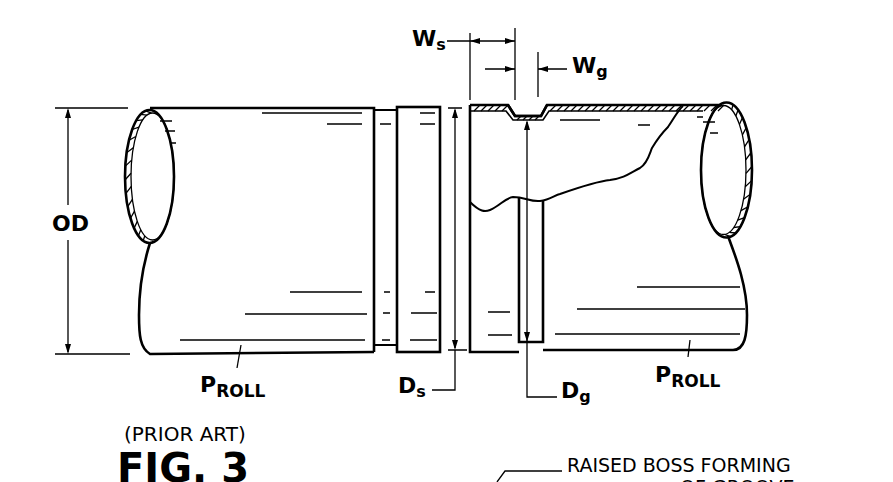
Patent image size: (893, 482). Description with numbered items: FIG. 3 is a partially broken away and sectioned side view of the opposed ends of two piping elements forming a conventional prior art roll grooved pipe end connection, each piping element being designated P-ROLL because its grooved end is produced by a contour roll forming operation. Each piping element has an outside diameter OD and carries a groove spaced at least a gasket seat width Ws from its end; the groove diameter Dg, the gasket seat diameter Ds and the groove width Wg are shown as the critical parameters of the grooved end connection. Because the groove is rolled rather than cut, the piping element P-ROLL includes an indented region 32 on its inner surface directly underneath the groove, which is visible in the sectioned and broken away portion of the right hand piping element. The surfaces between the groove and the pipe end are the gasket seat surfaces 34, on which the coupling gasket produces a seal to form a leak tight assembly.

The indented region 32 is at (545, 119).
The gasket seat surface 34 is at (414, 106).